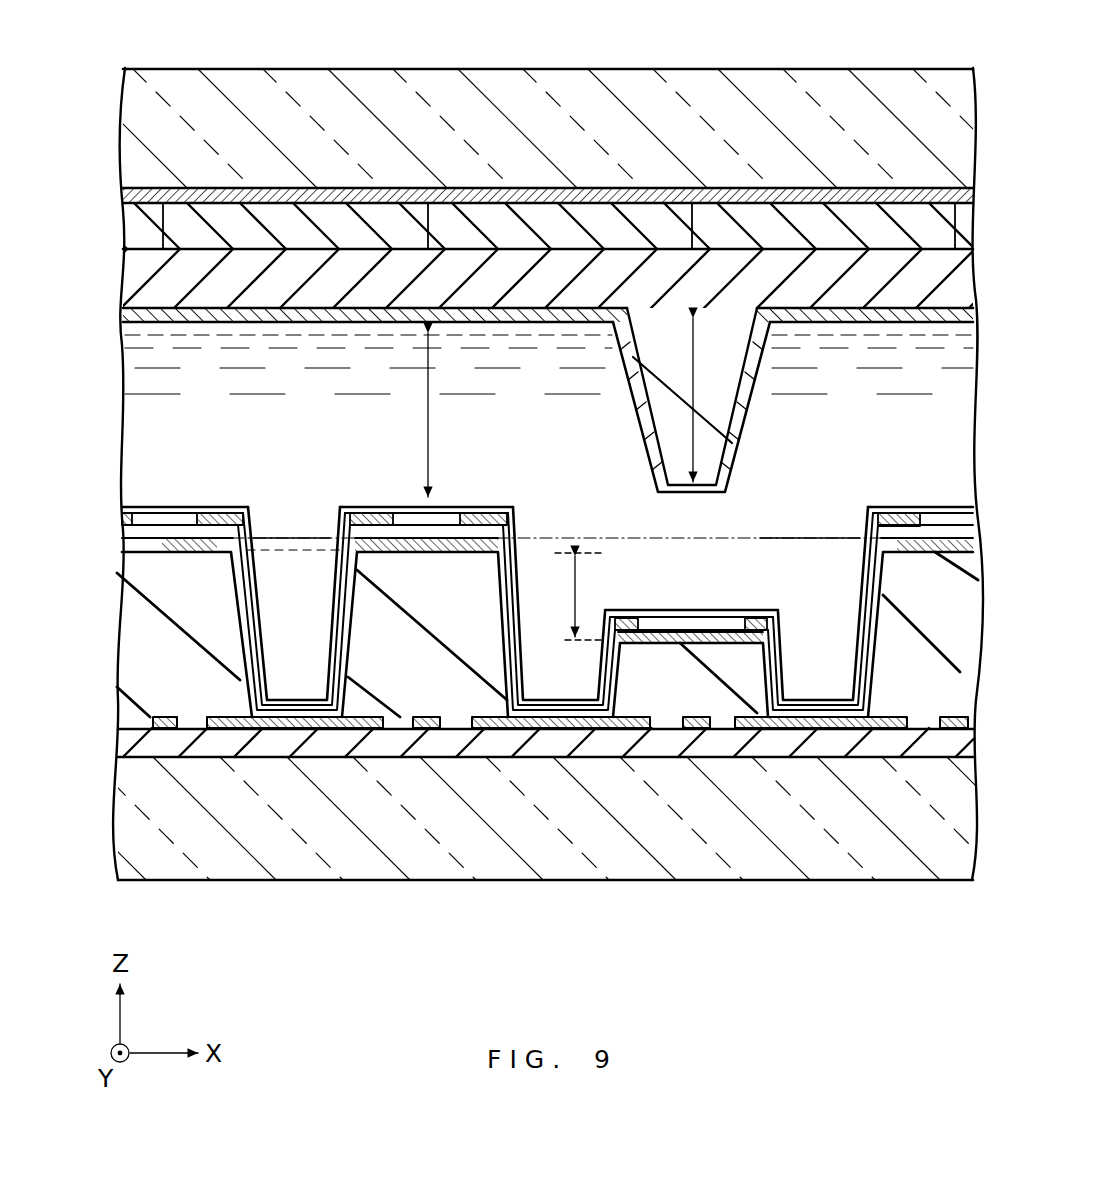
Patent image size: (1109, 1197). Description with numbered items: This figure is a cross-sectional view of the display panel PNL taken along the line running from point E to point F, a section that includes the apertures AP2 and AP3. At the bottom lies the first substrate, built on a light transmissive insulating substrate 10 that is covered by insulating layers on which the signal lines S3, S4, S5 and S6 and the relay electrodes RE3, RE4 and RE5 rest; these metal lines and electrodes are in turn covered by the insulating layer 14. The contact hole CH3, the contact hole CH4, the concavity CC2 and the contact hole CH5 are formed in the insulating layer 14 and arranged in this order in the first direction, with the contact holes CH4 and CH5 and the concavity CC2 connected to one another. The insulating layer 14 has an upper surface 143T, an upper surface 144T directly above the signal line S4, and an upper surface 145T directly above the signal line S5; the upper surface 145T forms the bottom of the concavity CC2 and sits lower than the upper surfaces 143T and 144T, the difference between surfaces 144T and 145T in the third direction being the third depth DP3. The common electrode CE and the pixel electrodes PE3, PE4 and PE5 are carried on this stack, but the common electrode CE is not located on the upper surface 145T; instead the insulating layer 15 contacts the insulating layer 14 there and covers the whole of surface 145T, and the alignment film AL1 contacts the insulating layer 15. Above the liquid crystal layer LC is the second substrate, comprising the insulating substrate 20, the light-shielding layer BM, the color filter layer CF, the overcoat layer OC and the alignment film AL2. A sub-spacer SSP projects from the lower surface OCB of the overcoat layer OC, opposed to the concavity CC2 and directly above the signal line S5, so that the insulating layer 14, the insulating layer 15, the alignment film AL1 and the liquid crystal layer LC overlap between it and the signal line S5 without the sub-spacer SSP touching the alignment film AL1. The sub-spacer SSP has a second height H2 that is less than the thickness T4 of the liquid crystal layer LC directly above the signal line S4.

The display panel PNL is at (802, 64).
The insulating substrate 20 is at (126, 88).
The light-shielding layer BM is at (134, 193).
The color filter layer CF is at (140, 226).
The overcoat layer OC is at (143, 273).
The alignment film AL2 is at (156, 314).
The liquid crystal layer LC is at (130, 389).
The sub-spacer SSP is at (737, 422).
The lower surface of the overcoat layer OCB is at (762, 340).
The second height H2 is at (690, 342).
The thickness of the liquid crystal layer T4 is at (431, 420).
The alignment film AL1 is at (130, 505).
The insulating layer 15 is at (124, 532).
The common electrode CE is at (128, 553).
The insulating layer 14 is at (130, 626).
The insulating substrate 10 is at (128, 794).
The upper surface 143T is at (163, 545).
The upper surface 144T is at (413, 545).
The upper surface 145T is at (688, 637).
The pixel electrode PE3 is at (357, 520).
The pixel electrode PE4 is at (482, 520).
The pixel electrode PE5 is at (900, 520).
The aperture AP2 is at (268, 538).
The aperture AP3 is at (782, 538).
The contact hole CH3 is at (293, 641).
The contact hole CH4 is at (547, 641).
The contact hole CH5 is at (815, 643).
The concavity CC2 is at (725, 606).
The third depth DP3 is at (578, 590).
The signal line S3 is at (166, 734).
The signal line S4 is at (430, 734).
The signal line S5 is at (690, 734).
The signal line S6 is at (950, 734).
The relay electrode RE3 is at (327, 734).
The relay electrode RE4 is at (568, 734).
The relay electrode RE5 is at (830, 734).
The line E-F end point E is at (116, 506).
The line E-F end point F is at (975, 507).